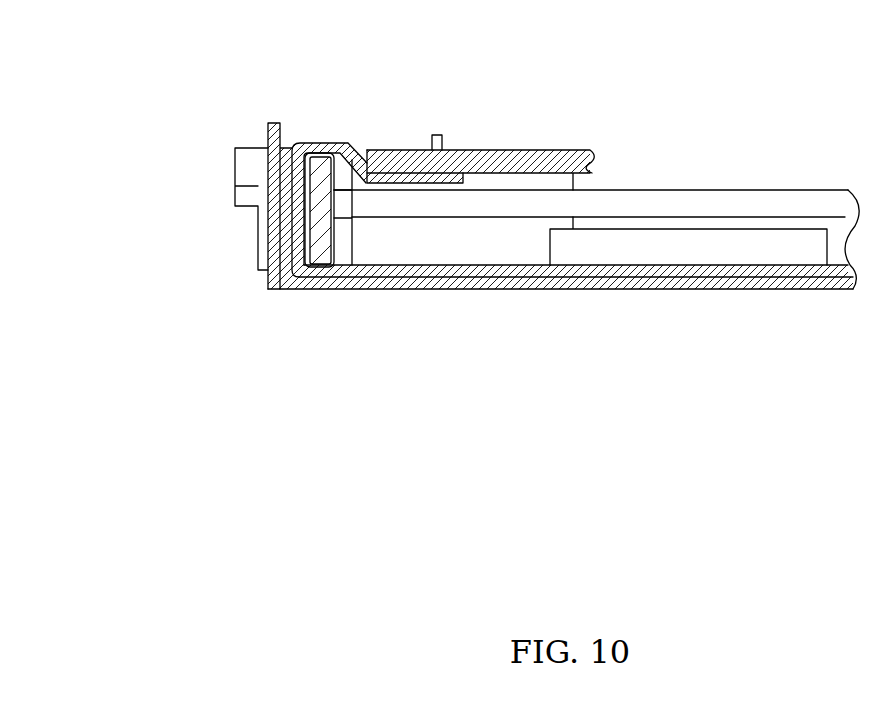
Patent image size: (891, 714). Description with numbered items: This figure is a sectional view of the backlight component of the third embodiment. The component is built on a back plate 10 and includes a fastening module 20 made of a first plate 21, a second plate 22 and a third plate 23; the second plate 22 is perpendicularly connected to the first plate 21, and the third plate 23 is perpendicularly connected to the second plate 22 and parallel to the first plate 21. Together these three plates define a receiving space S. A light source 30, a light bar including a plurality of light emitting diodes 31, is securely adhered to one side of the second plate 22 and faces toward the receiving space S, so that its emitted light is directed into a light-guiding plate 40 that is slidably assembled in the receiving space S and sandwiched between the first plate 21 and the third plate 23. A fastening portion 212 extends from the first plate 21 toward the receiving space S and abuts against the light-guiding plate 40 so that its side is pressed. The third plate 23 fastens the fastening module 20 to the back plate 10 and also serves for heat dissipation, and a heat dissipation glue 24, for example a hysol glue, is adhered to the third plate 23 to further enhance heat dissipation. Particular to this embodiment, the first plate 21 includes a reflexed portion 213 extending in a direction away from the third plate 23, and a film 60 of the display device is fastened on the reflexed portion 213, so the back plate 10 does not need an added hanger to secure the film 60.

The back plate 10 is at (706, 283).
The fastening module 20 is at (142, 30).
The first plate 21 is at (332, 148).
The second plate 22 is at (282, 186).
The third plate 23 is at (332, 271).
The fastening portion 212 is at (403, 178).
The reflexed portion 213 is at (440, 135).
The heat dissipation glue 24 is at (650, 248).
The light source 30 is at (322, 223).
The light emitting diode 31 is at (345, 210).
The light-guiding plate 40 is at (645, 205).
The film 60 is at (553, 162).
The receiving space S is at (446, 234).